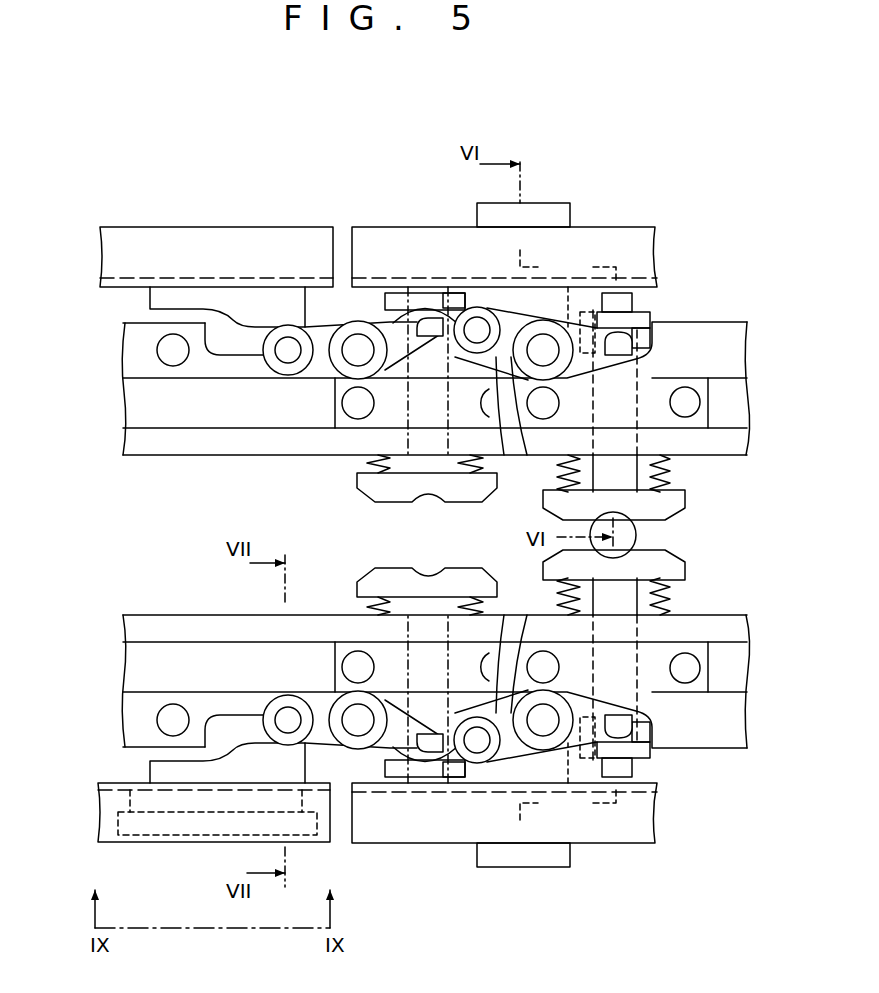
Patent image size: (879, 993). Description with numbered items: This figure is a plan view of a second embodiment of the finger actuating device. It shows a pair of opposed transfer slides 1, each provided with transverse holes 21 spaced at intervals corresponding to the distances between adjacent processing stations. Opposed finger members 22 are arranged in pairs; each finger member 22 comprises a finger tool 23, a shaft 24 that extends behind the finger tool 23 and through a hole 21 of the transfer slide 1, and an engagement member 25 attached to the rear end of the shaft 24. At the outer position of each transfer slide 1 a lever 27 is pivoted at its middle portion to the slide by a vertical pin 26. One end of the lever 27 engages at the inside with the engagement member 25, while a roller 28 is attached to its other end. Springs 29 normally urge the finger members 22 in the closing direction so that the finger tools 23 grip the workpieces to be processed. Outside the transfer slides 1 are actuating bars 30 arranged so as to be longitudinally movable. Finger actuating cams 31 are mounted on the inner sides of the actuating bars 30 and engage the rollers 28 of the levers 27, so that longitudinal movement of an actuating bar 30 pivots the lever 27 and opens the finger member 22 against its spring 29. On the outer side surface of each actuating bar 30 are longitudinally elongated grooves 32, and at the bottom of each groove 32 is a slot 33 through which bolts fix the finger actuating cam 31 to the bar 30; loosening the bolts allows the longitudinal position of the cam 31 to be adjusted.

The transfer slide 1 is at (727, 337).
The transverse hole 21 is at (593, 437).
The finger member 22 is at (685, 500).
The finger tool 23 is at (677, 515).
The shaft 24 is at (620, 468).
The engagement member 25 is at (650, 318).
The vertical pin 26 is at (533, 347).
The lever 27 is at (523, 793).
The roller 28 is at (430, 322).
The spring 29 is at (672, 475).
The actuating bar 30 is at (633, 246).
The finger actuating cam 31 is at (170, 302).
The elongated groove 32 is at (118, 835).
The slot 33 is at (105, 802).